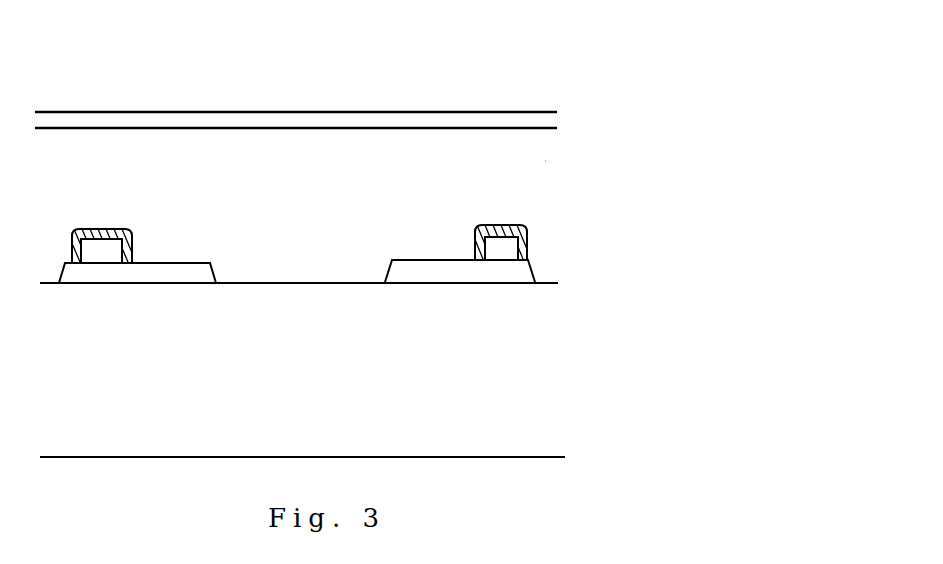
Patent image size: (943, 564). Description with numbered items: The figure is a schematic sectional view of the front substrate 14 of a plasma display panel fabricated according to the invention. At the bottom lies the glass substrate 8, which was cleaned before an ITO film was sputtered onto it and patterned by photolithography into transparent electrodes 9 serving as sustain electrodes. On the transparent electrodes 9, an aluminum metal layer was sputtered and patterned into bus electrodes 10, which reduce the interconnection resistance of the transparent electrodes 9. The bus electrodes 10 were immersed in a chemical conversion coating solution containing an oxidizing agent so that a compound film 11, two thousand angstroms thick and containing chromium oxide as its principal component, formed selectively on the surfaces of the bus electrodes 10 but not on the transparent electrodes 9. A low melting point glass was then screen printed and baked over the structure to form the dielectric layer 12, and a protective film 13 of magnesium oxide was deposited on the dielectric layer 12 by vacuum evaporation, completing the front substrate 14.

The glass substrate 8 is at (545, 378).
The transparent electrodes 9 is at (522, 270).
The bus electrodes 10 is at (506, 247).
The compound film 11 is at (517, 227).
The dielectric layer 12 is at (545, 161).
The protective film 13 is at (547, 119).
The front substrate 14 is at (418, 86).